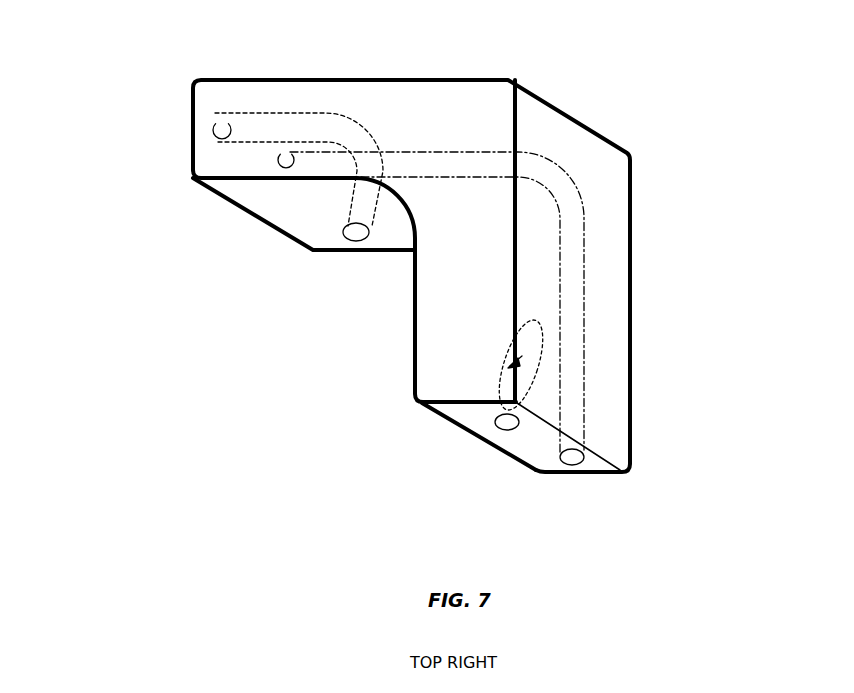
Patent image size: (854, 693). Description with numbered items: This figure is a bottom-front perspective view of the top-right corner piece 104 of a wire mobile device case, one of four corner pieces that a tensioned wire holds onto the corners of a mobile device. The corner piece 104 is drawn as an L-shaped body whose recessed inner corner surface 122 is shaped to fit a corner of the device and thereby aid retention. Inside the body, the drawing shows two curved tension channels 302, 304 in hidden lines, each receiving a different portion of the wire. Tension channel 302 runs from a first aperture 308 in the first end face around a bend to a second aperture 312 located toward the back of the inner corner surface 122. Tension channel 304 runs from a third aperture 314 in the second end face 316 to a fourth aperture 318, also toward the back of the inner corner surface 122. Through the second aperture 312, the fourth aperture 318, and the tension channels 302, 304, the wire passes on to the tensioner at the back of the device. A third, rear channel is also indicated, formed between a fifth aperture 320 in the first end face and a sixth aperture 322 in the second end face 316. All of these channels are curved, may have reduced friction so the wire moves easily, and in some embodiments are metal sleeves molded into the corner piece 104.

The top-right corner piece 104 is at (480, 100).
The inner corner surface 122 is at (251, 207).
The tension channel 302 is at (266, 104).
The tension channel 304 is at (497, 350).
The first aperture 308 is at (208, 130).
The second aperture 312 is at (347, 240).
The third aperture 314 is at (509, 442).
The second end face 316 is at (455, 431).
The fourth aperture 318 is at (497, 380).
The fifth aperture 320 is at (272, 163).
The sixth aperture 322 is at (594, 252).